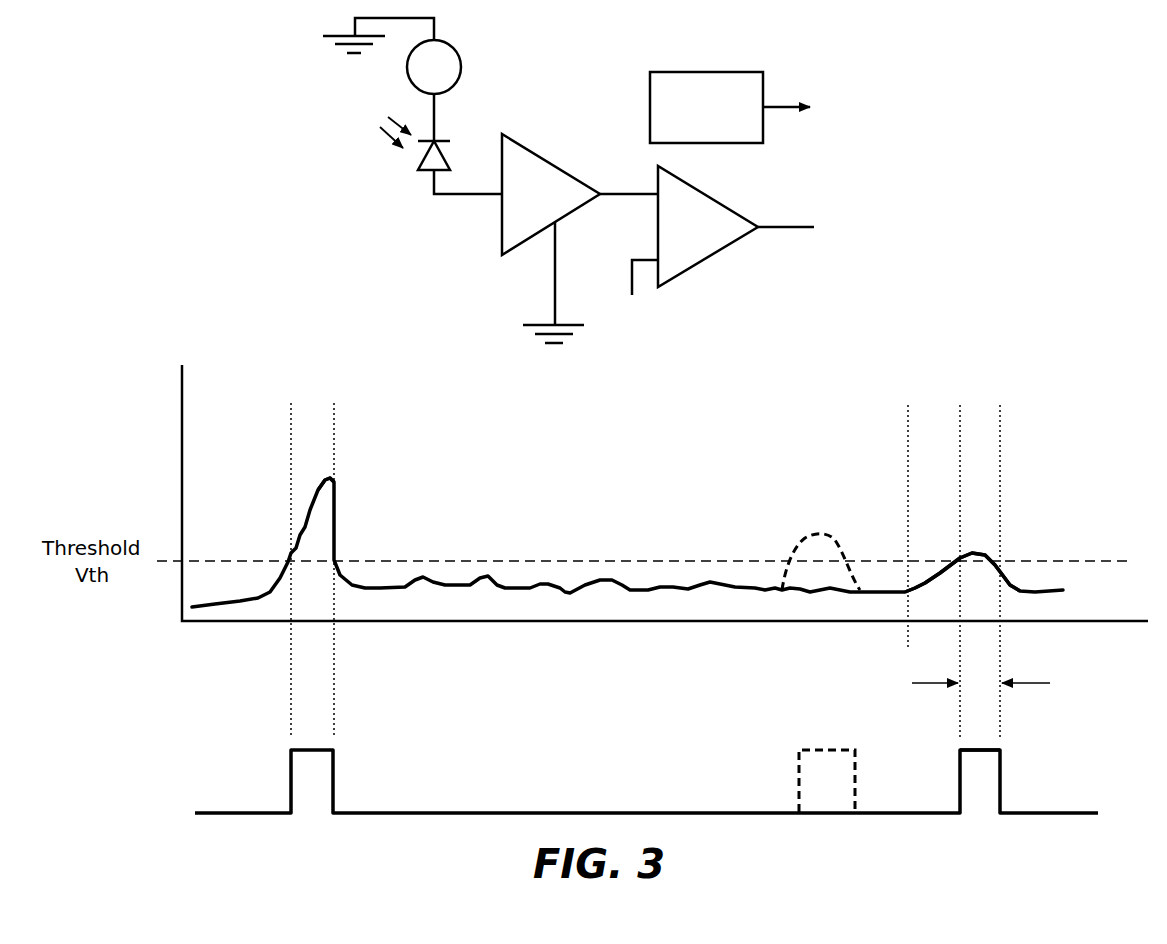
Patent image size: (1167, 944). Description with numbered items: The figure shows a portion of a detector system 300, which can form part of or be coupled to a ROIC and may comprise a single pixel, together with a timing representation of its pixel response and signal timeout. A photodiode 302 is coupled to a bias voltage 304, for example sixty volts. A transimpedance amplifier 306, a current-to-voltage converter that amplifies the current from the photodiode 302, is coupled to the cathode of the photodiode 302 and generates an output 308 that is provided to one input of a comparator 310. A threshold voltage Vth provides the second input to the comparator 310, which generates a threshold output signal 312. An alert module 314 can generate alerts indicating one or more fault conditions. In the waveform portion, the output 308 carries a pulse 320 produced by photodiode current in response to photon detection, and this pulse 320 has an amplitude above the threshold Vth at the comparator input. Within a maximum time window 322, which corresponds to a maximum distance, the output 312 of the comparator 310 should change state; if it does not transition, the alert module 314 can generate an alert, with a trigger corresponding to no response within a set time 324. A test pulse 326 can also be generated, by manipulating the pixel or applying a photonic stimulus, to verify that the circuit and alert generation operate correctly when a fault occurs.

The detector system 300 is at (630, 50).
The photodiode 302 is at (423, 173).
The bias voltage 304 is at (463, 65).
The transimpedance amplifier 306 is at (511, 221).
The output 308 is at (620, 192).
The comparator 310 is at (677, 240).
The threshold output signal 312 is at (789, 224).
The alert module 314 is at (689, 136).
The pulse 320 is at (334, 477).
The maximum time window 322 is at (985, 692).
The set time 324 is at (911, 571).
The test pulse 326 is at (808, 530).